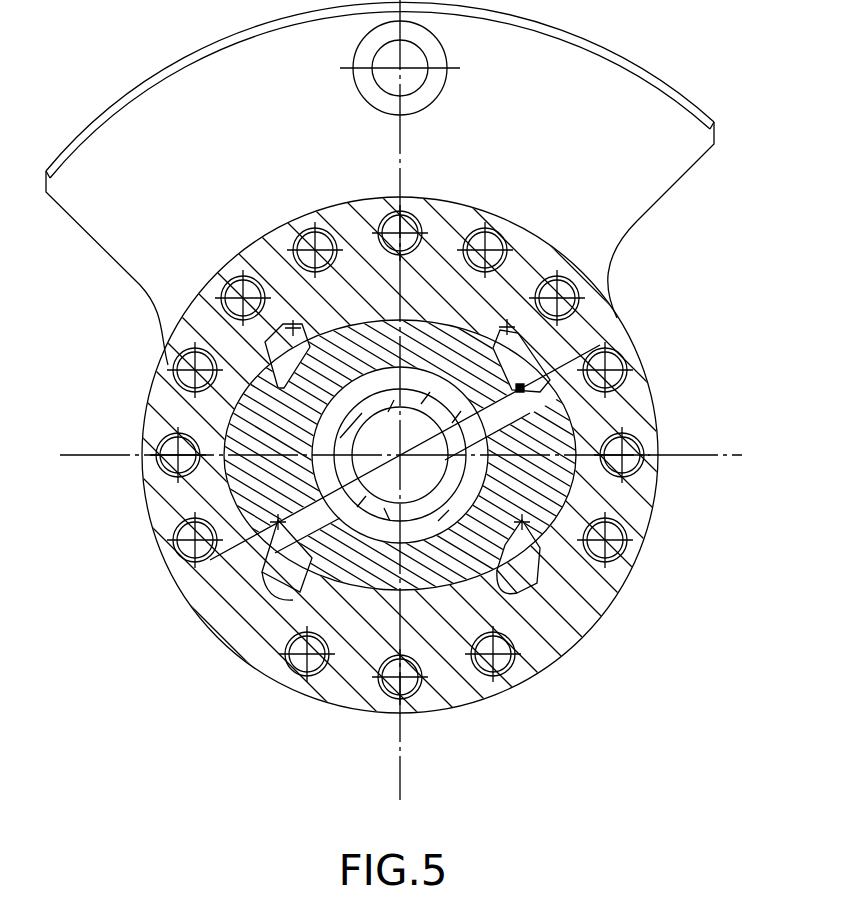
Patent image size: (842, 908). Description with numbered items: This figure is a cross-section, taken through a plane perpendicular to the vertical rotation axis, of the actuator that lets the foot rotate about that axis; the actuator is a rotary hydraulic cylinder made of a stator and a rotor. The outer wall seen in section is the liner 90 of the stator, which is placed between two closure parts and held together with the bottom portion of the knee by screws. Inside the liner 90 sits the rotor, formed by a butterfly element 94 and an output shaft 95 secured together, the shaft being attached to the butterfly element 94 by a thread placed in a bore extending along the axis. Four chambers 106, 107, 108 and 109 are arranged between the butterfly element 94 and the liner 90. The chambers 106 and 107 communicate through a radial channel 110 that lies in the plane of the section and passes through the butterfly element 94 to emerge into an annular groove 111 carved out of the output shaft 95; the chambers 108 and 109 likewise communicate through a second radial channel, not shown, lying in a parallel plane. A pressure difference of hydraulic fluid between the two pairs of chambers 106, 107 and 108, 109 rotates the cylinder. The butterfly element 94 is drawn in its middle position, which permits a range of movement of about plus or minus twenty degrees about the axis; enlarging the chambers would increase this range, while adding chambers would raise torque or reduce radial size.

The liner 90 is at (640, 508).
The butterfly element 94 is at (543, 440).
The output shaft 95 is at (453, 473).
The chamber 106 is at (597, 337).
The chamber 107 is at (258, 580).
The chamber 108 is at (263, 360).
The chamber 109 is at (522, 567).
The radial channel 110 is at (285, 513).
The annular groove 111 is at (347, 402).